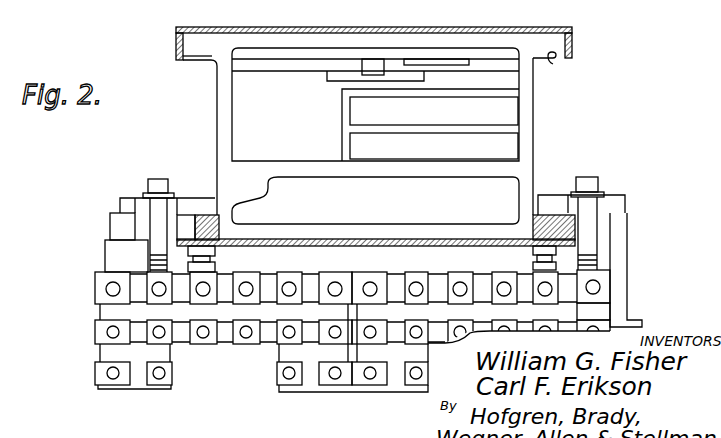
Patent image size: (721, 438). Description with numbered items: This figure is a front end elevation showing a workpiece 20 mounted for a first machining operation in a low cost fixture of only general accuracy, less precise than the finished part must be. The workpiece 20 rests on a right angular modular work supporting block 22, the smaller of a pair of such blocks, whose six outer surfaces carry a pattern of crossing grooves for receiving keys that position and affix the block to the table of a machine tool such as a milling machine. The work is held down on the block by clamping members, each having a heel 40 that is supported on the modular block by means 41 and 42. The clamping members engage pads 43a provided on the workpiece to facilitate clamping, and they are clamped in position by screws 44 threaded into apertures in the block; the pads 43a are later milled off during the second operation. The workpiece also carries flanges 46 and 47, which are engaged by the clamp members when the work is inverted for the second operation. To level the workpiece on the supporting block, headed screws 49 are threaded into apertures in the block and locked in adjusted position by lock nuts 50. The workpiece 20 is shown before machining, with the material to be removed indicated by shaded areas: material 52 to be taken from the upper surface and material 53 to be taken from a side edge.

The workpiece 20 is at (537, 105).
The work supporting block 22 is at (614, 277).
The heel 40 is at (128, 205).
The heel supporting means 41 is at (104, 252).
The heel supporting means 42 is at (631, 232).
The pad 43a is at (190, 228).
The screw 44 is at (158, 182).
The flange 46 is at (554, 60).
The flange 47 is at (195, 55).
The headed screw 49 is at (216, 254).
The lock nut 50 is at (204, 268).
The material to be removed from upper surface 52 is at (420, 28).
The material to be removed from side edge 53 is at (176, 44).